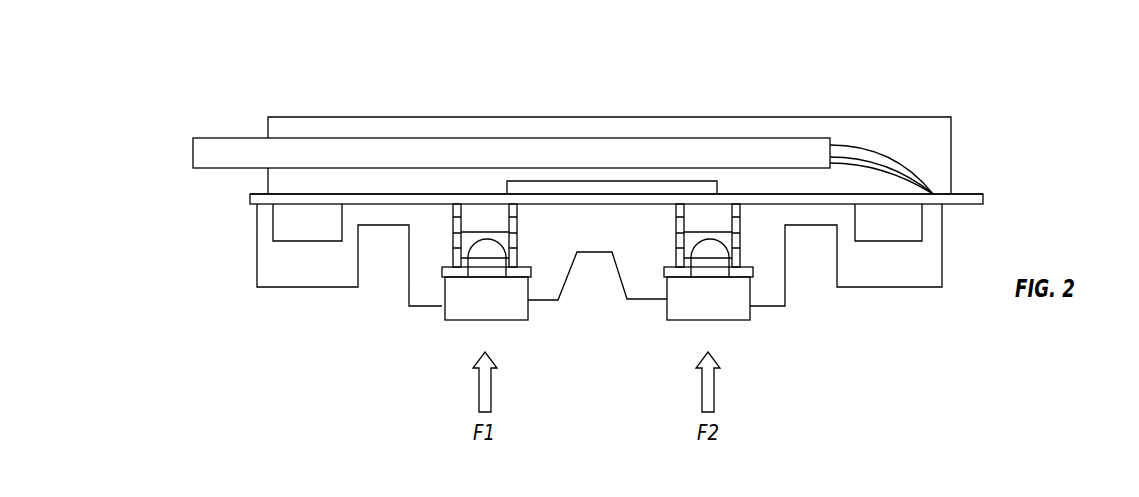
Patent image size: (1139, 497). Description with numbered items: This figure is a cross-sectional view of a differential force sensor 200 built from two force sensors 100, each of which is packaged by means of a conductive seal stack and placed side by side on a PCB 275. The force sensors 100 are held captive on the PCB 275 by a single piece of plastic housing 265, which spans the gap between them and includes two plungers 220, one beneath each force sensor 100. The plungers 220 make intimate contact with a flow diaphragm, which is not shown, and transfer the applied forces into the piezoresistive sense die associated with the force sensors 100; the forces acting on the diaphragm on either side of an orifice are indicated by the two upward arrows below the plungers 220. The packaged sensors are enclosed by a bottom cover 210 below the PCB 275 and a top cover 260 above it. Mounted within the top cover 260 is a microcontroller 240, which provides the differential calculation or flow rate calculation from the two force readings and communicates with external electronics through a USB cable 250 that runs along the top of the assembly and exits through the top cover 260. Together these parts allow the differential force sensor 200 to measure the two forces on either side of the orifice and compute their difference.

The differential force sensor 200 is at (157, 68).
The force sensor 100 is at (497, 218).
The bottom cover 210 is at (326, 276).
The plunger 220 is at (500, 310).
The microcontroller 240 is at (578, 188).
The USB cable 250 is at (448, 150).
The top cover 260 is at (942, 146).
The single plastic housing 265 is at (633, 294).
The PCB 275 is at (963, 194).